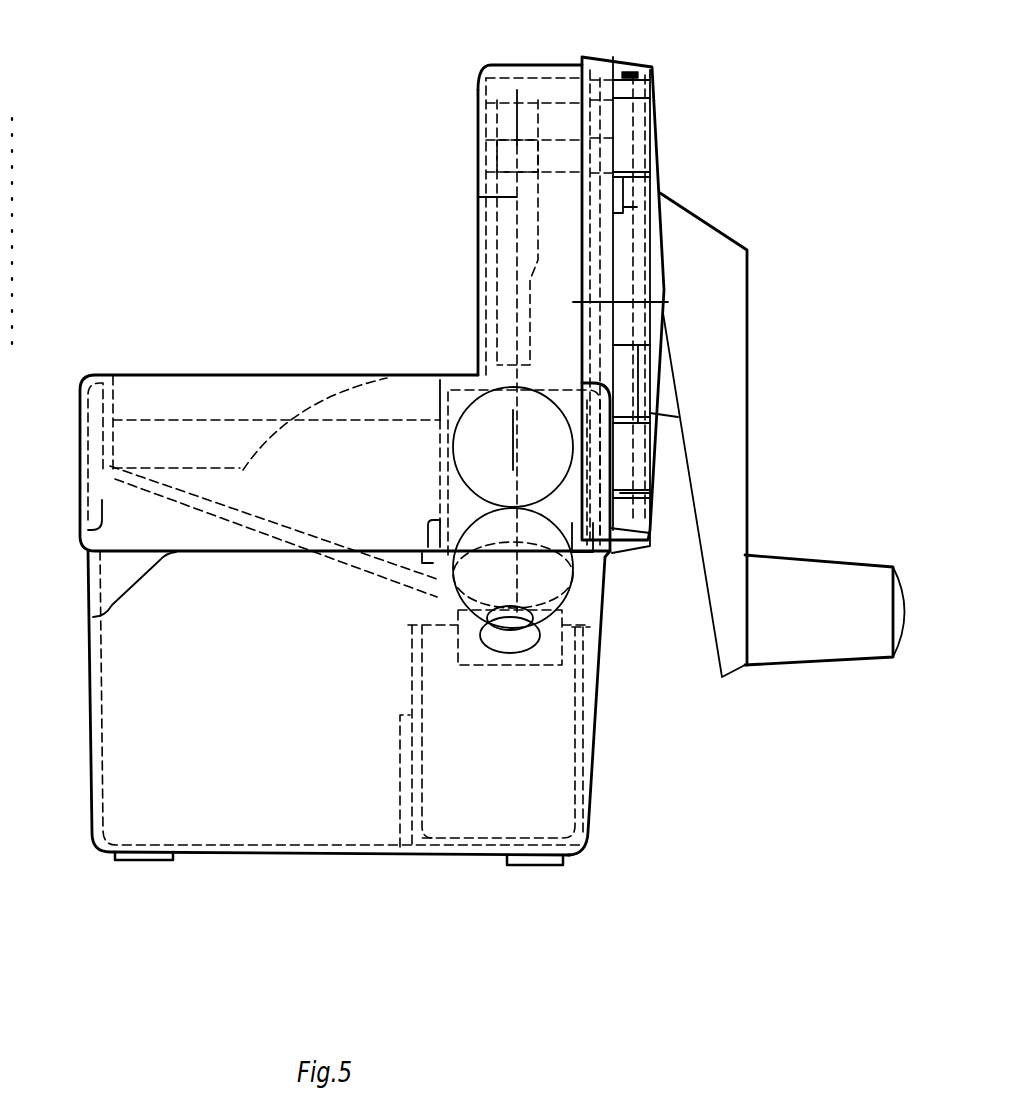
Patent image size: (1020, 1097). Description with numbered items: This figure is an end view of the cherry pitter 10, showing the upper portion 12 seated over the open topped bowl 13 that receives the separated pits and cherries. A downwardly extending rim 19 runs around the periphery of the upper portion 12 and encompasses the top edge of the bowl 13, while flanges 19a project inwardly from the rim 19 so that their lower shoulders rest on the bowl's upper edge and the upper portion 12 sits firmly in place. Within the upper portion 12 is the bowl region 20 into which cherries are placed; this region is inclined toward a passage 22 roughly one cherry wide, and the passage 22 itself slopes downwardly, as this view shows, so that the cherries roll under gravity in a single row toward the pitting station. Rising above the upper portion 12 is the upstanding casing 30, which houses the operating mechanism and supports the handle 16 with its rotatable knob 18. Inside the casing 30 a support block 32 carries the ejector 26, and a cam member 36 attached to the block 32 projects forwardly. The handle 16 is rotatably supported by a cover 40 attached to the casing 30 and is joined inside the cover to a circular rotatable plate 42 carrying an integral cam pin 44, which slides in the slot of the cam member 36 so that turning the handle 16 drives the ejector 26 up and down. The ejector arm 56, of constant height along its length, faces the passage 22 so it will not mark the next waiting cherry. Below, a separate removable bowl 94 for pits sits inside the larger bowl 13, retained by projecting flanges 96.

The cherry pitter 10 is at (112, 357).
The upper portion 12 is at (475, 350).
The open topped bowl 13 is at (597, 680).
The handle 16 is at (720, 345).
The rotatable knob 18 is at (808, 617).
The rim 19 is at (97, 617).
The flanges 19a is at (83, 517).
The bowl region 20 is at (193, 470).
The passage 22 is at (267, 520).
The ejector 26 is at (477, 197).
The upstanding casing 30 is at (510, 63).
The support block 32 is at (498, 120).
The cam member 36 is at (613, 98).
The cover 40 is at (660, 135).
The circular rotatable plate 42 is at (653, 470).
The cam pin 44 is at (628, 195).
The arm 56 is at (493, 265).
The removable bowl 94 is at (420, 733).
The projecting flanges 96 is at (402, 783).